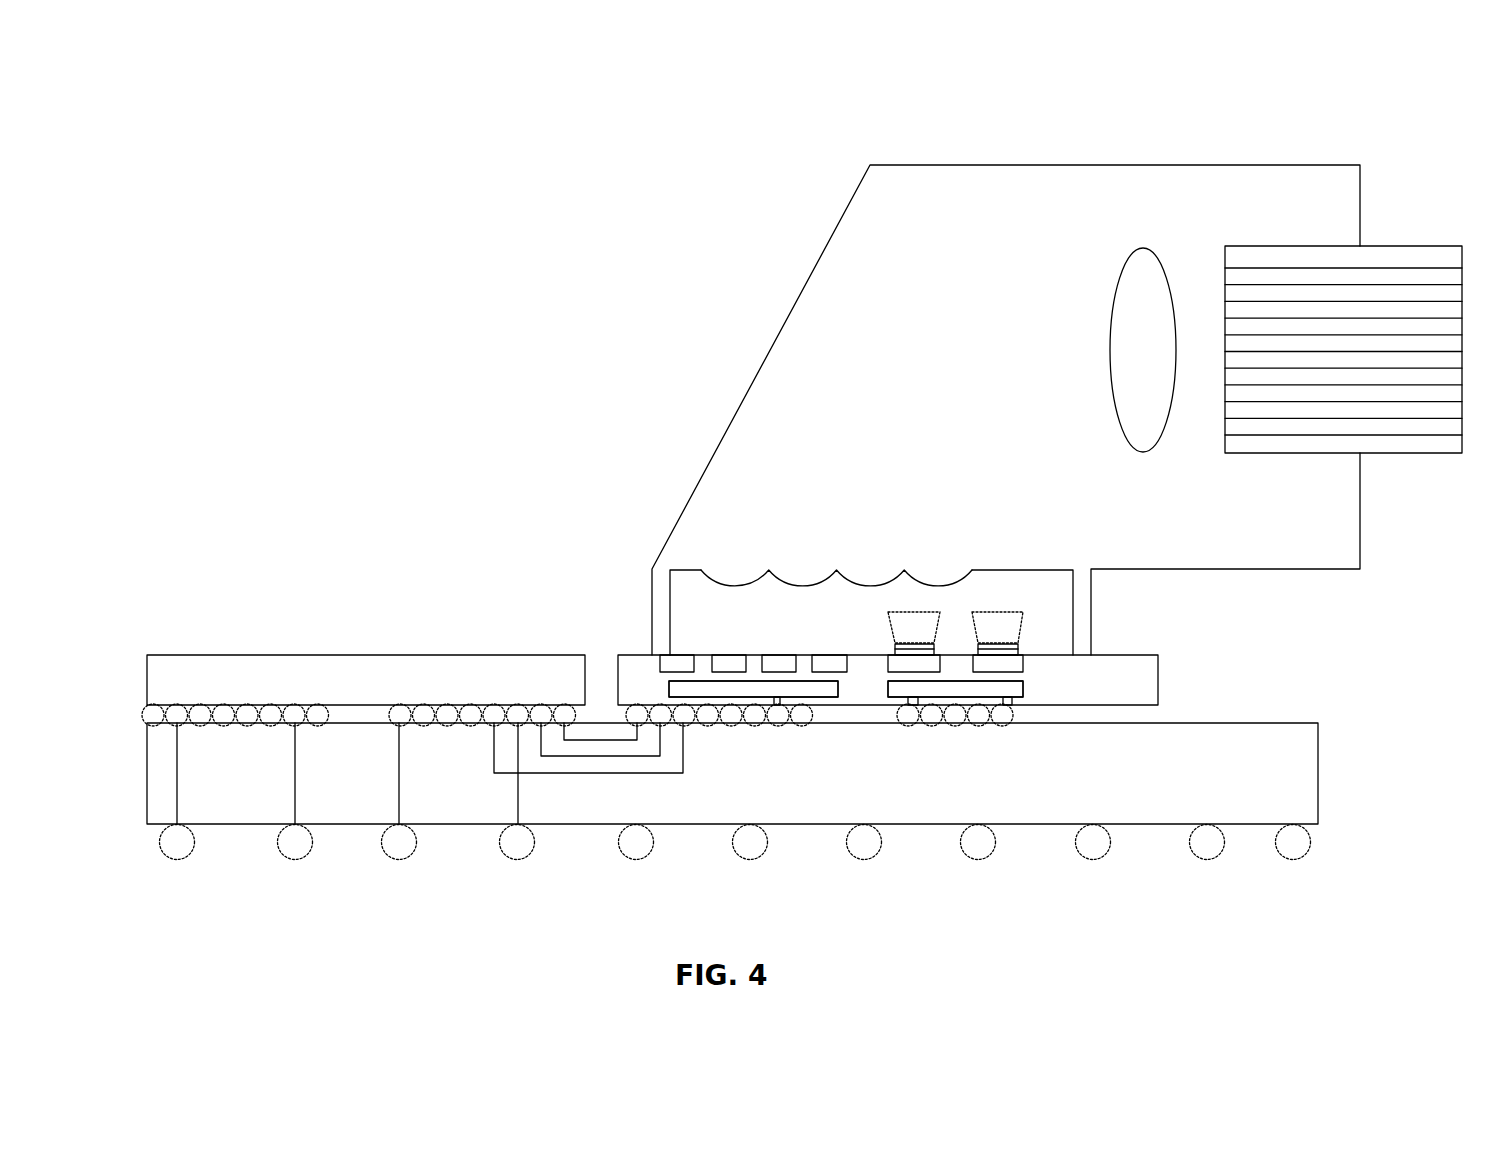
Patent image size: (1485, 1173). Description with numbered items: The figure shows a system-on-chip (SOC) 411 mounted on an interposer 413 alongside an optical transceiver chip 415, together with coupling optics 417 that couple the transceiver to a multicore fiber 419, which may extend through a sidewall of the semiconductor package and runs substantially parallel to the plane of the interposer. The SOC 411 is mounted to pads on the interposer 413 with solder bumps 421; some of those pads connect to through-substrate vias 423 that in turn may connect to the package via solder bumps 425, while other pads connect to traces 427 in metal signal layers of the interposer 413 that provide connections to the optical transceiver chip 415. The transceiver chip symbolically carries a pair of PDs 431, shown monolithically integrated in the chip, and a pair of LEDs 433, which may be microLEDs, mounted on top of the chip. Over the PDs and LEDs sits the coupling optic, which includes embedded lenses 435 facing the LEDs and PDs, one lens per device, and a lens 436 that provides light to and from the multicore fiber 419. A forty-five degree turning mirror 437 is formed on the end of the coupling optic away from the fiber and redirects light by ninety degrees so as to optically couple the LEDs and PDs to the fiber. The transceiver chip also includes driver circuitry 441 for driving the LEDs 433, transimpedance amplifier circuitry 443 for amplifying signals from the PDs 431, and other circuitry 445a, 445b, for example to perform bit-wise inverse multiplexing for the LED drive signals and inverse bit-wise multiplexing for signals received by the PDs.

The system-on-chip 411 is at (267, 655).
The interposer 413 is at (143, 782).
The optical transceiver chip 415 is at (1158, 672).
The coupling optics 417 is at (1035, 142).
The multicore fiber 419 is at (1390, 243).
The solder bumps 421 is at (145, 715).
The through-substrate vias 423 is at (399, 783).
The solder bumps 425 is at (300, 860).
The traces 427 is at (540, 773).
The photodetectors 431 is at (738, 654).
The LEDs 433 is at (895, 648).
The embedded lenses 435 is at (934, 586).
The lens 436 is at (1110, 337).
The 45 degree turning mirror 437 is at (738, 415).
The driver circuitry 441 is at (890, 660).
The transimpedance amplifier circuitry 443 is at (662, 672).
The other circuitry 445a is at (1025, 698).
The other circuitry 445b is at (840, 698).